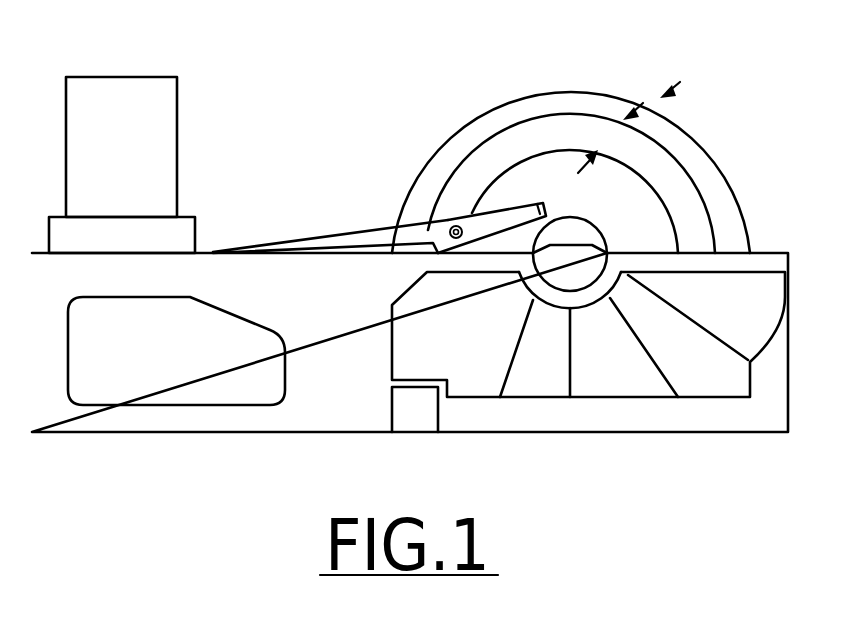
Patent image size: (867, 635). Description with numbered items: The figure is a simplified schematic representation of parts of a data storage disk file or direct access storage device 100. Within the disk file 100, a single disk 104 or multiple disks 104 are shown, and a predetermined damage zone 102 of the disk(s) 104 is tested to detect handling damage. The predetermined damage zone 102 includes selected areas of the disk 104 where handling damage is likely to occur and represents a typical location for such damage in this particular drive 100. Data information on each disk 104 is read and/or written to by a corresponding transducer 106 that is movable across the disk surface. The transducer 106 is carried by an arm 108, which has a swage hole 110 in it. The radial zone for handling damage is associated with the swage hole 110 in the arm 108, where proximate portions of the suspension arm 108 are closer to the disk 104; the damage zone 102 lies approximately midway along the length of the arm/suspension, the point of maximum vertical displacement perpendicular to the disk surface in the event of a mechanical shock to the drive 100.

The data storage disk file 100 is at (327, 306).
The predetermined damage zone 102 is at (600, 118).
The disk 104 is at (583, 150).
The transducer 106 is at (533, 188).
The arm 108 is at (473, 208).
The swage hole 110 is at (440, 216).